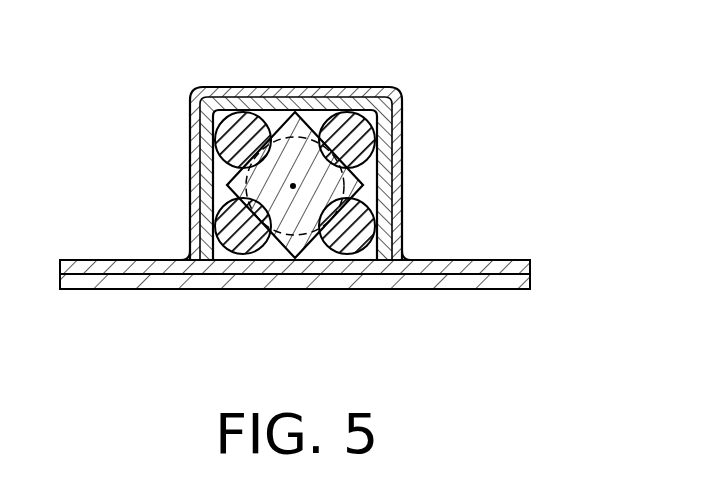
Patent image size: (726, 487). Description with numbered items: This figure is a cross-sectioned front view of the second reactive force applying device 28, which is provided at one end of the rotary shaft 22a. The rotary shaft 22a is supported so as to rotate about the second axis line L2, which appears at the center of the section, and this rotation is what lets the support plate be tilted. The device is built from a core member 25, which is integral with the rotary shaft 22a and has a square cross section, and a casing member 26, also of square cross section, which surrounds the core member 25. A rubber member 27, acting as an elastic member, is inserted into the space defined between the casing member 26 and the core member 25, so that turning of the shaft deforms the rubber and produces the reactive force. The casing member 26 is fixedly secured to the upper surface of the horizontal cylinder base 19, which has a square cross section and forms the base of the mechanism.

The cylinder base 19 is at (478, 281).
The rotary shaft 22a is at (288, 135).
The core member 25 is at (396, 196).
The casing member 26 is at (208, 192).
The rubber member 27 is at (236, 122).
The second reactive force applying device 28 is at (320, 148).
The second axis line L2 is at (293, 186).